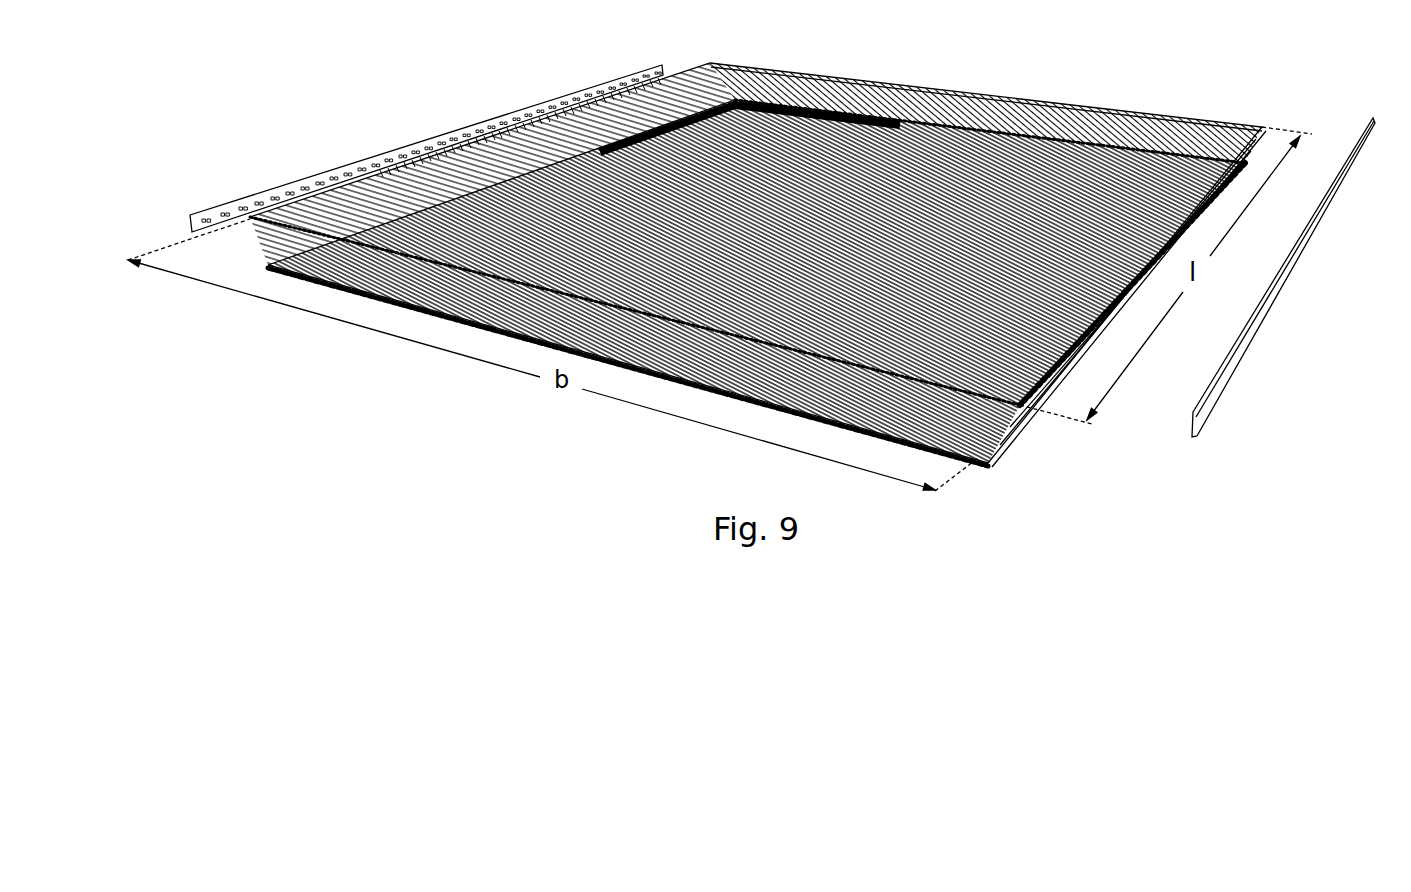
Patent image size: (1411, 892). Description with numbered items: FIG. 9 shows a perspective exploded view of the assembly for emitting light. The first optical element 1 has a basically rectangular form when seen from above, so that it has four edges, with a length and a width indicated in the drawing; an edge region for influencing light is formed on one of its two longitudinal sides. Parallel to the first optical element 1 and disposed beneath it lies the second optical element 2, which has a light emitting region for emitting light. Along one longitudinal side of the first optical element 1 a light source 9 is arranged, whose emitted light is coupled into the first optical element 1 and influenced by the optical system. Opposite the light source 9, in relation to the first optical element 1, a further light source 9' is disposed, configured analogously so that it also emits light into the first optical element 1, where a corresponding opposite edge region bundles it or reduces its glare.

The first optical element 1 is at (826, 76).
The second optical element 2 is at (270, 264).
The light source 9 is at (426, 148).
The further light source 9' is at (1271, 277).